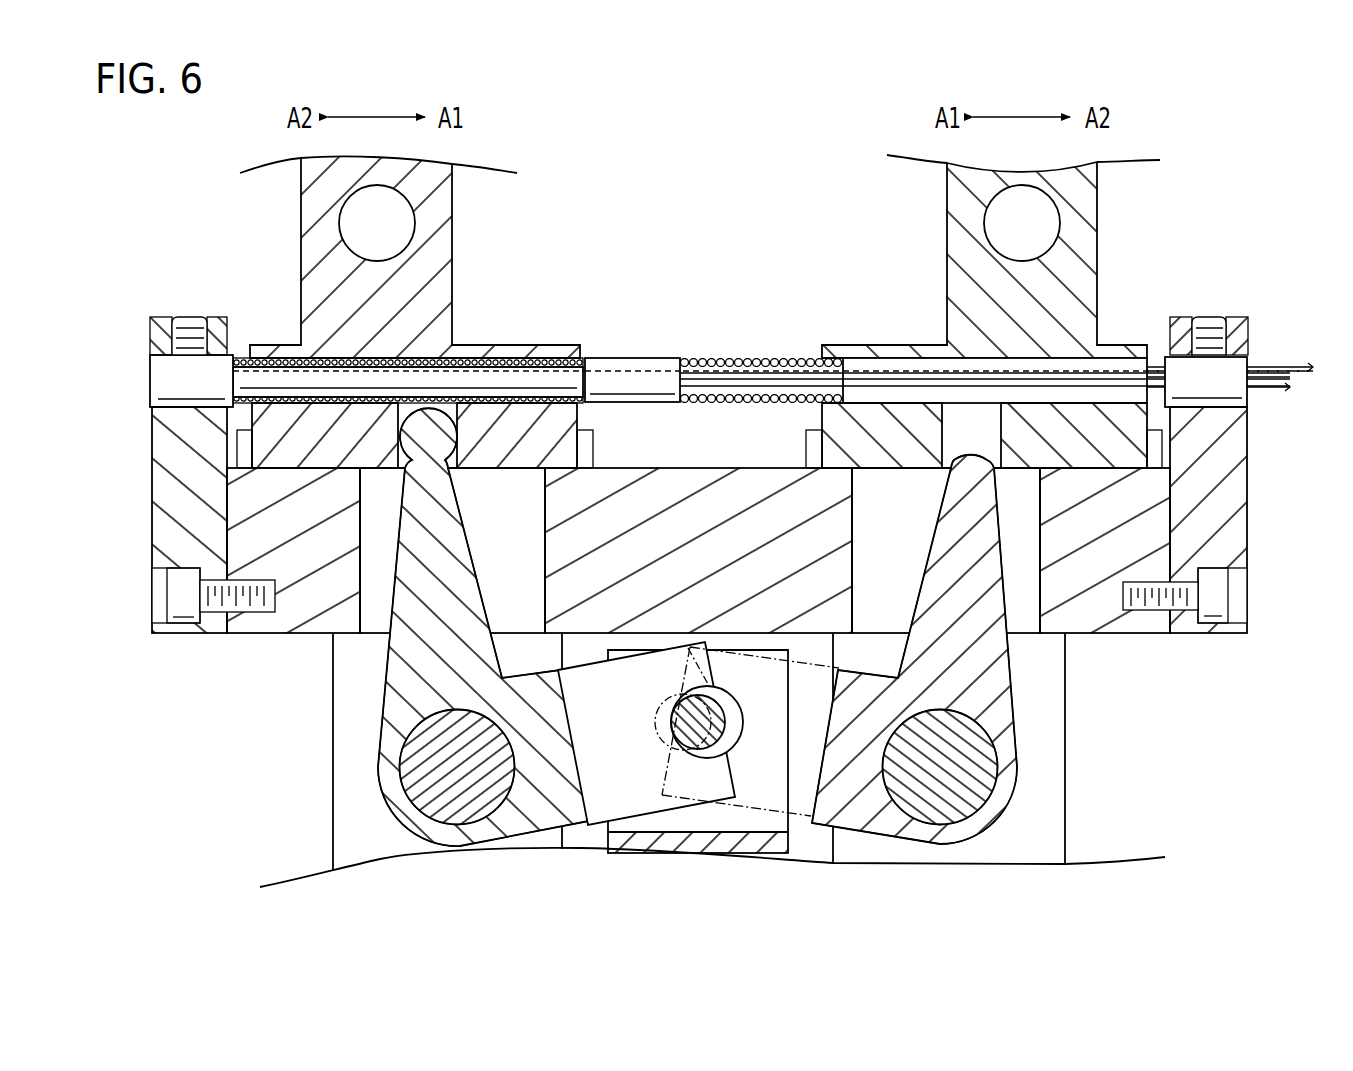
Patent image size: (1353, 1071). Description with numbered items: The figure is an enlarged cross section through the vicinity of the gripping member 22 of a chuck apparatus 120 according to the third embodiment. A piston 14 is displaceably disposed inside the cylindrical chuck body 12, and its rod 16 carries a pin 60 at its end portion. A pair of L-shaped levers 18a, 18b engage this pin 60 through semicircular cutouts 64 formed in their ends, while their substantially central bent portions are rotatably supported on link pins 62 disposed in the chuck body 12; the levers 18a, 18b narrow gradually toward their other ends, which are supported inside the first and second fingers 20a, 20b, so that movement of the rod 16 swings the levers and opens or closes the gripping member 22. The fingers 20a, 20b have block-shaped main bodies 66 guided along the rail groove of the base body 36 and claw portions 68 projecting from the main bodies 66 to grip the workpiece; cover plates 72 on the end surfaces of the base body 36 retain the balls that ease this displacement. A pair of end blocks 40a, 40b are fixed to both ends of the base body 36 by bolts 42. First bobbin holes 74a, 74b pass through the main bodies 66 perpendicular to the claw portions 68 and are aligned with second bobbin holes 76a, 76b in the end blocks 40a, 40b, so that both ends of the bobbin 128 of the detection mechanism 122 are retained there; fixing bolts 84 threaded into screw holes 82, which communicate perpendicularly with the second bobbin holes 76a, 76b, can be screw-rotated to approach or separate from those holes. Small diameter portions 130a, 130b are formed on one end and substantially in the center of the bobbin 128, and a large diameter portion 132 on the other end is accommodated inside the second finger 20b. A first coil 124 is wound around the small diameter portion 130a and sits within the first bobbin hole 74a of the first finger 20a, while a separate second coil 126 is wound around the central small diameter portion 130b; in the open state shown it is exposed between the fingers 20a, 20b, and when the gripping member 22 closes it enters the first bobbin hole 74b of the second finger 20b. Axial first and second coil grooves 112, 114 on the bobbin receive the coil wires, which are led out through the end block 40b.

The chuck body 12 is at (712, 771).
The piston 14 is at (670, 855).
The rod 16 is at (742, 853).
The lever 18a is at (392, 800).
The lever 18b is at (1008, 800).
The first finger 20a is at (400, 257).
The second finger 20b is at (1002, 261).
The gripping member 22 is at (400, 257).
The base body 36 is at (1138, 636).
The end block 40a is at (160, 512).
The end block 40b is at (1240, 512).
The bolts 42 is at (185, 607).
The pin 60 is at (698, 733).
The link pins 62 is at (415, 752).
The cutouts 64 is at (735, 712).
The main bodies 66 is at (773, 334).
The claw portions 68 is at (445, 240).
The cover plates 72 is at (243, 440).
The first bobbin hole 74a is at (450, 342).
The first bobbin hole 74b is at (990, 368).
The second bobbin hole 76a is at (165, 368).
The second bobbin hole 76b is at (1240, 368).
The screw holes 82 is at (176, 318).
The fixing bolts 84 is at (186, 318).
The first coil groove 112 is at (600, 365).
The second coil groove 114 is at (728, 385).
The chuck apparatus 120 is at (1285, 168).
The detection mechanism 122 is at (648, 302).
The first coil 124 is at (540, 355).
The second coil 126 is at (773, 357).
The bobbin 128 is at (622, 353).
The small diameter portion 130a is at (262, 375).
The small diameter portion 130b is at (748, 390).
The large diameter portion 132 is at (862, 368).